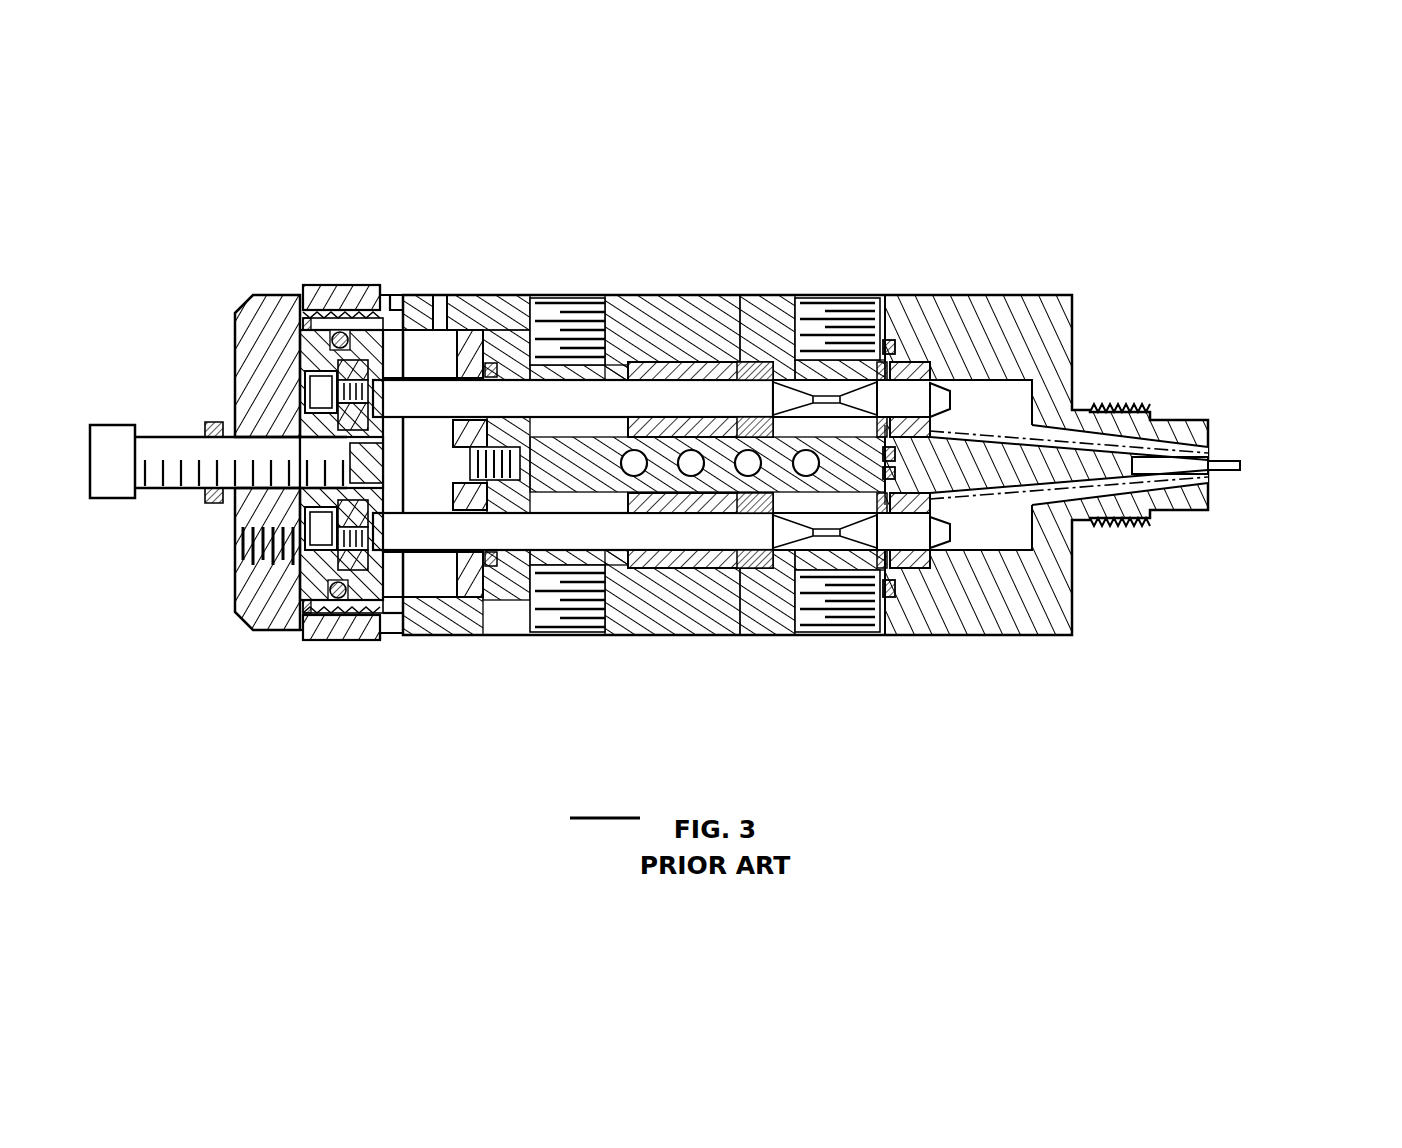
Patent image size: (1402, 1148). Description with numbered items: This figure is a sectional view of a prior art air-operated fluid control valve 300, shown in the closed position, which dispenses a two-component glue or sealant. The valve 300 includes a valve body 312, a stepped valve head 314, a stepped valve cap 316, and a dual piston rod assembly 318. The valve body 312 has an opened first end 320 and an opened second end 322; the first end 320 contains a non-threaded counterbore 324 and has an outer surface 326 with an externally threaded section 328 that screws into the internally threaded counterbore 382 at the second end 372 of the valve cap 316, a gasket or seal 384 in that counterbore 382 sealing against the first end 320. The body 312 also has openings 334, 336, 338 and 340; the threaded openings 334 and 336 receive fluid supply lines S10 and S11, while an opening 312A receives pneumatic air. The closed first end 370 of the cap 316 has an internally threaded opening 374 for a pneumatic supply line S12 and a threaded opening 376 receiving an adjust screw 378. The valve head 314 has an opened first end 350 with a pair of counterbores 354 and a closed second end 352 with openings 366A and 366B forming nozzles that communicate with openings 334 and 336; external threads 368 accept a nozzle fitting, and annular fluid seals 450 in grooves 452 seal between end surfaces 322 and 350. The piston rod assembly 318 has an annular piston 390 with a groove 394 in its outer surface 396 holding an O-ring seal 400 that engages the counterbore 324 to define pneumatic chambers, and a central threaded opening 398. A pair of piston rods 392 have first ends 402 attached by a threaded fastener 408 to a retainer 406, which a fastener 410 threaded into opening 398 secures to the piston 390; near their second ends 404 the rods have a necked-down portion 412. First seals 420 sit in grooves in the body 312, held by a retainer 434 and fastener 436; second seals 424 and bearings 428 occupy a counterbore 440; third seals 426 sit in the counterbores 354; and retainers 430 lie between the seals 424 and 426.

The fluid control valve 300 is at (828, 195).
The valve body 312 is at (688, 288).
The opening 312A is at (449, 297).
The valve head 314 is at (1024, 288).
The valve cap 316 is at (326, 278).
The dual piston rod assembly 318 is at (427, 572).
The first end 320 is at (297, 601).
The second end 322 is at (933, 634).
The counterbore 324 is at (435, 266).
The outer surface 326 is at (397, 641).
The externally threaded section 328 is at (337, 641).
The opening 334 is at (812, 295).
The opening 336 is at (798, 634).
The opening 338 is at (543, 297).
The opening 340 is at (540, 634).
The first end 350 is at (877, 640).
The second end 352 is at (1216, 433).
The counterbores 354 is at (905, 600).
The opening 366A is at (1246, 465).
The opening 366B is at (1216, 488).
The external threads 368 is at (1126, 405).
The first end 370 is at (234, 343).
The second end 372 is at (402, 297).
The internally threaded opening 374 is at (237, 575).
The threaded opening 376 is at (248, 445).
The adjust screw 378 is at (112, 424).
The counterbore 382 is at (377, 285).
The gasket or seal 384 is at (308, 285).
The piston 390 is at (315, 352).
The piston rods 392 is at (627, 295).
The groove 394 is at (300, 641).
The outer surface 396 is at (350, 633).
The threaded opening 398 is at (367, 467).
The annular seal 400 is at (347, 287).
The first end 402 is at (457, 477).
The second end 404 is at (936, 527).
The retainer 406 is at (370, 415).
The threaded fastener 408 is at (297, 513).
The threaded fastener 410 is at (353, 470).
The reduced diameter portion 412 is at (780, 582).
The first seals 420 is at (492, 380).
The second seals 424 is at (757, 382).
The third seals 426 is at (945, 427).
The bearings 428 is at (636, 381).
The retainers 430 is at (800, 412).
The retainer 434 is at (463, 598).
The fastener 436 is at (433, 503).
The counterbore 440 is at (717, 295).
The annular fluid seal 450 is at (905, 617).
The annular grooves 452 is at (853, 636).
The fluid supply line S10 is at (838, 288).
The fluid supply line S11 is at (835, 647).
The pneumatic supply line S12 is at (132, 530).